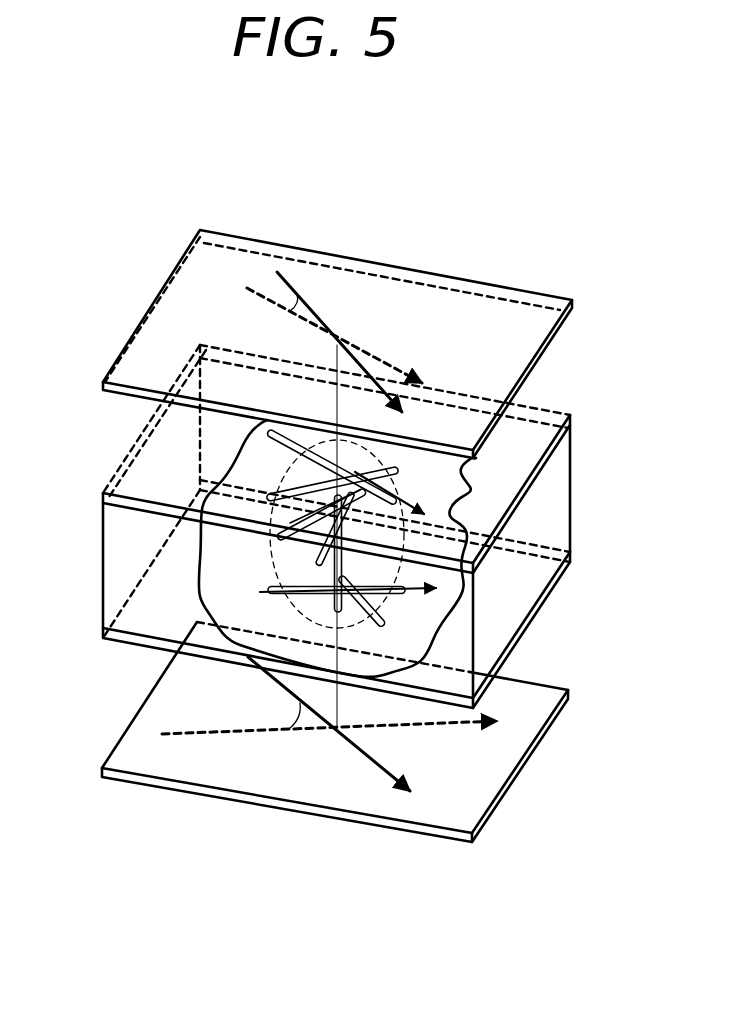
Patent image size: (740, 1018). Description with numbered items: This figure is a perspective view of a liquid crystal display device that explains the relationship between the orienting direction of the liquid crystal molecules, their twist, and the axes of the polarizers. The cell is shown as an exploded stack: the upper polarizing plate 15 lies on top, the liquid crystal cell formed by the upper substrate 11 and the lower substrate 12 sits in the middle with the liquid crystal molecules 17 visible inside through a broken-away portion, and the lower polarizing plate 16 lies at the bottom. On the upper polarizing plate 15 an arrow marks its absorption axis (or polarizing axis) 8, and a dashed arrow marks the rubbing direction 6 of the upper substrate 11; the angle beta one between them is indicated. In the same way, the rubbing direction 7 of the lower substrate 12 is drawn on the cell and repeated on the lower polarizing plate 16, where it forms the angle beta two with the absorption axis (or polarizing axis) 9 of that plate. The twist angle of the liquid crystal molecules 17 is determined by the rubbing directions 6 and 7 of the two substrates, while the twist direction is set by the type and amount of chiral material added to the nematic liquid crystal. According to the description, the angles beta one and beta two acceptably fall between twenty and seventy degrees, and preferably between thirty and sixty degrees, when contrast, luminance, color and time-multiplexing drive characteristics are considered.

The absorption axis of the upper polarizing plate 8 is at (297, 290).
The upper polarizing plate 15 is at (520, 318).
The rubbing direction of the upper substrate 6 is at (383, 364).
The upper substrate 11 is at (520, 447).
The liquid crystal molecules 17 is at (275, 462).
The lower substrate 12 is at (557, 590).
The rubbing direction of the lower substrate 7 is at (420, 592).
The lower polarizing plate 16 is at (527, 703).
The absorption axis of the lower polarizing plate 9 is at (397, 783).